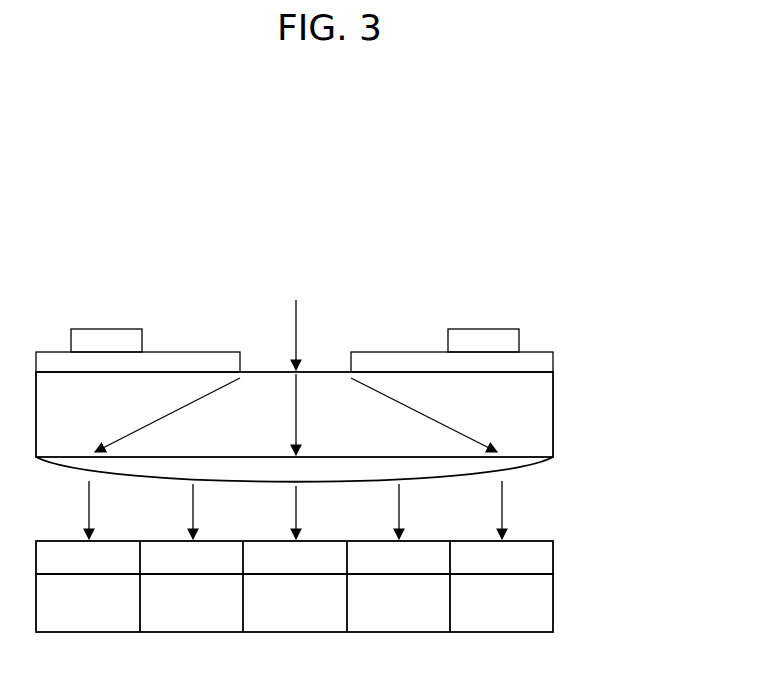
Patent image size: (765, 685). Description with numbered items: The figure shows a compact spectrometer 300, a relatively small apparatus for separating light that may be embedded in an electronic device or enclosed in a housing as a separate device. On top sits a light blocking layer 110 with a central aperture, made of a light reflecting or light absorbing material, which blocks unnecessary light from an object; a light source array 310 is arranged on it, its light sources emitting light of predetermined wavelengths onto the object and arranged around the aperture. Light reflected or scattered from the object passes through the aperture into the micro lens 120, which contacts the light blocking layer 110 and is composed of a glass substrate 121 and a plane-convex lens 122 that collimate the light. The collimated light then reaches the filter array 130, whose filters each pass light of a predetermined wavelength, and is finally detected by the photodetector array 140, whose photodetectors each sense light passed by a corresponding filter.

The compact spectrometer 300 is at (474, 279).
The light source array 310 is at (108, 330).
The light blocking layer 110 is at (553, 356).
The micro lens 120 is at (362, 427).
The glass substrate 121 is at (553, 411).
The plane-convex lens 122 is at (553, 462).
The filter array 130 is at (553, 548).
The photodetector array 140 is at (553, 595).